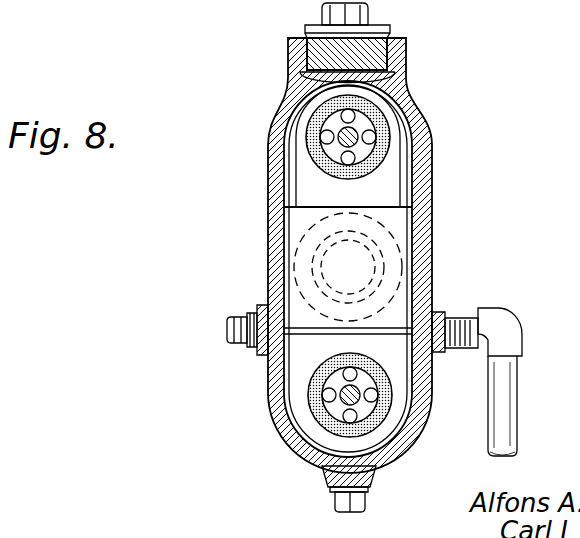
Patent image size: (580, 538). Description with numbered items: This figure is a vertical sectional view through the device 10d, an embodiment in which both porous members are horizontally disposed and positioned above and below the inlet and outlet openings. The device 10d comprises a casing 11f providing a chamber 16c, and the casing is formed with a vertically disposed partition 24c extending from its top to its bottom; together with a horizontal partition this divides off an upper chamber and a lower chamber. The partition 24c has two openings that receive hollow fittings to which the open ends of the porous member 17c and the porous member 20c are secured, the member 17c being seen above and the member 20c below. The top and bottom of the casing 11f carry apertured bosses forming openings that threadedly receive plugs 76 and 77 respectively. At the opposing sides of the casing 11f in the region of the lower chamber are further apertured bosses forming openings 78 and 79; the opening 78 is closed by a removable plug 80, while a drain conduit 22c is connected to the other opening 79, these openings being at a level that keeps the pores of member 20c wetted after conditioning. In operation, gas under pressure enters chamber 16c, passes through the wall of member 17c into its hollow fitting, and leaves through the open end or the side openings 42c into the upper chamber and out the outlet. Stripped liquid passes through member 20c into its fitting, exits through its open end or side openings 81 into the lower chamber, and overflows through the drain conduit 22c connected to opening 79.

The device 10d is at (380, 257).
The casing 11f is at (432, 232).
The chamber 16c is at (430, 275).
The porous member 17c is at (392, 126).
The porous member 20c is at (418, 432).
The drain conduit 22c is at (510, 403).
The vertically disposed partition 24c is at (408, 178).
The side openings 42c is at (345, 152).
The plug 76 is at (380, 30).
The plug 77 is at (362, 497).
The opening 78 is at (235, 346).
The opening 79 is at (462, 349).
The removable plug 80 is at (255, 318).
The side openings 81 is at (346, 410).